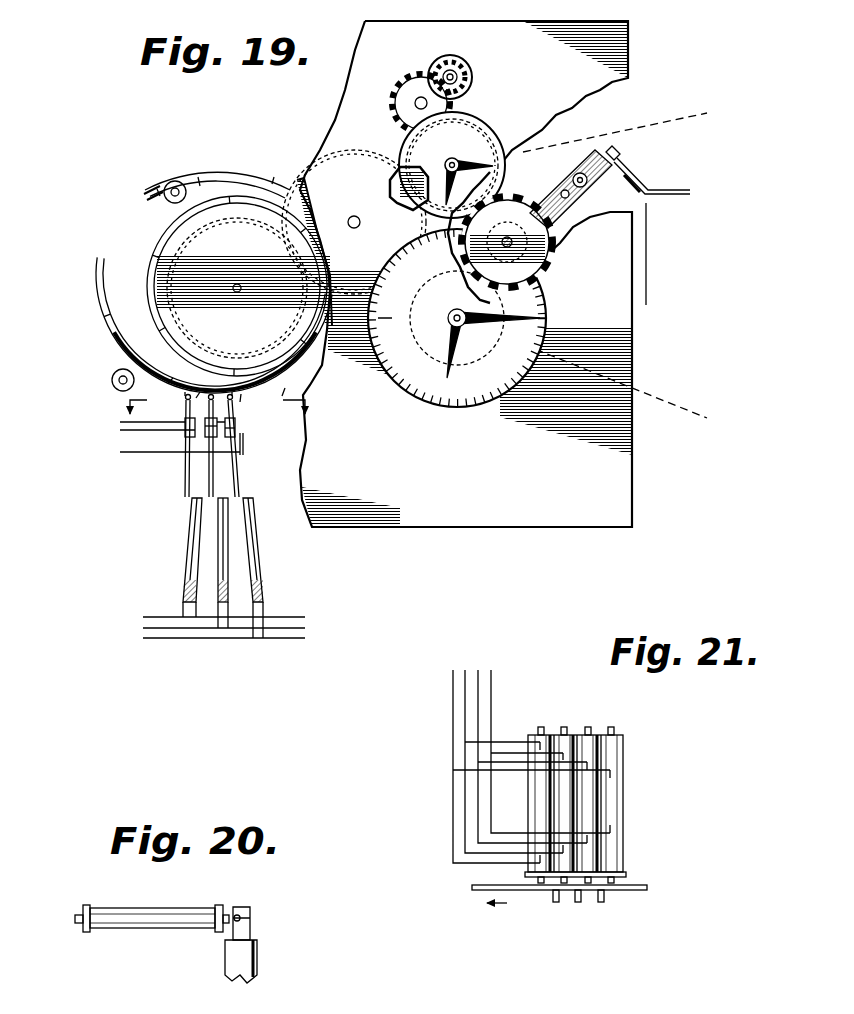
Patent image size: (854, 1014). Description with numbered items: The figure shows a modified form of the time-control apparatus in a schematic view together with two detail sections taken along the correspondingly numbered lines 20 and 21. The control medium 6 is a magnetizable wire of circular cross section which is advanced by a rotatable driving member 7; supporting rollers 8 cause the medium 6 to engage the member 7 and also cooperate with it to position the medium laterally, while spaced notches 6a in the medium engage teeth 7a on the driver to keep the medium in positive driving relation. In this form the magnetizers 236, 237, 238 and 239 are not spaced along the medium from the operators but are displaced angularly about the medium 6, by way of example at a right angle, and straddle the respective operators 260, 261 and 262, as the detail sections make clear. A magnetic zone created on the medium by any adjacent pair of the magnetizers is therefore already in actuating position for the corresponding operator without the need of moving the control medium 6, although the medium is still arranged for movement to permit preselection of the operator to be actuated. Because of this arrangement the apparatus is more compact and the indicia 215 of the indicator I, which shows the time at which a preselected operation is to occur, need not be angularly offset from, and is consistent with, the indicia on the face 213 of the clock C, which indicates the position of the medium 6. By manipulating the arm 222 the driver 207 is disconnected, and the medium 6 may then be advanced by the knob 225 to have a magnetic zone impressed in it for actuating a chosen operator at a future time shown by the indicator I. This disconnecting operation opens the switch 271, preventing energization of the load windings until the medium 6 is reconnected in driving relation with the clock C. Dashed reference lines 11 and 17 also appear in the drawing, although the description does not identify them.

In FIG. 19, the control medium 6 is at (95, 292).
In FIG. 20, the control medium 6 is at (248, 916).
In FIG. 21, the control medium 6 is at (470, 891).
In FIG. 19, the notches 6a is at (110, 316).
In FIG. 19, the rotatable driving member 7 is at (158, 245).
In FIG. 19, the teeth 7a is at (152, 257).
In FIG. 19, the supporting rollers 8 is at (178, 183).
In FIG. 19, the reference line 11 is at (683, 400).
In FIG. 19, the reference line 17 is at (688, 120).
In FIG. 19, the section line 20 is at (192, 441).
In FIG. 19, the section line 21 is at (218, 407).
In FIG. 19, the driver 207 is at (560, 245).
In FIG. 19, the face of the clock 213 is at (480, 410).
In FIG. 19, the indicia of the indicator 215 is at (412, 142).
In FIG. 19, the arm 222 is at (475, 224).
In FIG. 19, the knob 225 is at (470, 72).
In FIG. 19, the magnetizer 236 is at (168, 376).
In FIG. 21, the magnetizer 236 is at (538, 733).
In FIG. 19, the magnetizer 237 is at (234, 440).
In FIG. 21, the magnetizer 237 is at (575, 733).
In FIG. 19, the magnetizer 238 is at (238, 426).
In FIG. 20, the magnetizer 238 is at (262, 978).
In FIG. 21, the magnetizer 238 is at (598, 733).
In FIG. 19, the magnetizer 239 is at (245, 412).
In FIG. 21, the magnetizer 239 is at (628, 766).
In FIG. 19, the operator 260 is at (207, 457).
In FIG. 21, the operator 260 is at (600, 905).
In FIG. 19, the operator 261 is at (202, 440).
In FIG. 21, the operator 261 is at (577, 905).
In FIG. 19, the operator 262 is at (194, 420).
In FIG. 21, the operator 262 is at (552, 902).
In FIG. 19, the switch 271 is at (640, 166).
In FIG. 19, the clock C is at (406, 408).
In FIG. 19, the indicator I is at (500, 125).